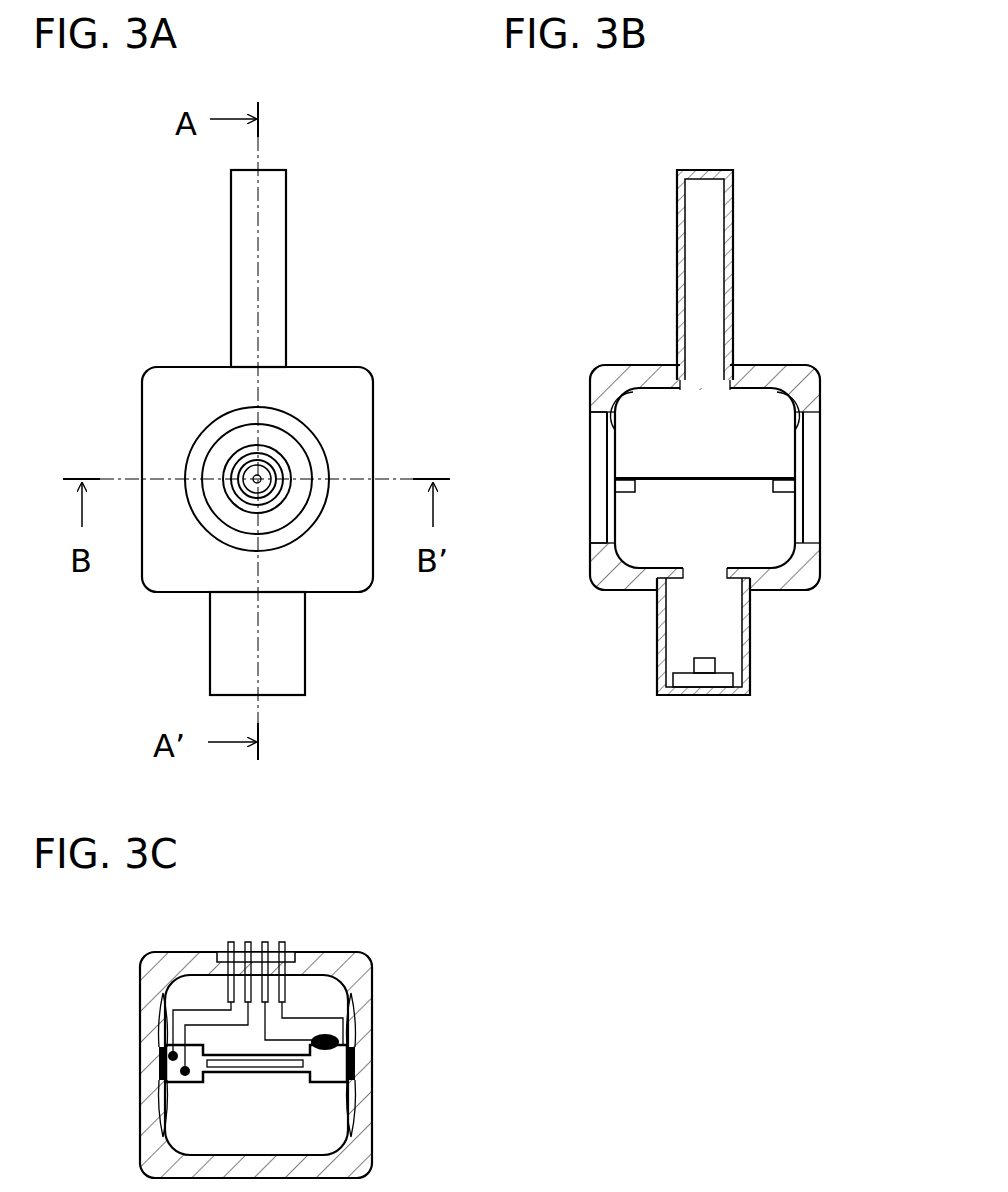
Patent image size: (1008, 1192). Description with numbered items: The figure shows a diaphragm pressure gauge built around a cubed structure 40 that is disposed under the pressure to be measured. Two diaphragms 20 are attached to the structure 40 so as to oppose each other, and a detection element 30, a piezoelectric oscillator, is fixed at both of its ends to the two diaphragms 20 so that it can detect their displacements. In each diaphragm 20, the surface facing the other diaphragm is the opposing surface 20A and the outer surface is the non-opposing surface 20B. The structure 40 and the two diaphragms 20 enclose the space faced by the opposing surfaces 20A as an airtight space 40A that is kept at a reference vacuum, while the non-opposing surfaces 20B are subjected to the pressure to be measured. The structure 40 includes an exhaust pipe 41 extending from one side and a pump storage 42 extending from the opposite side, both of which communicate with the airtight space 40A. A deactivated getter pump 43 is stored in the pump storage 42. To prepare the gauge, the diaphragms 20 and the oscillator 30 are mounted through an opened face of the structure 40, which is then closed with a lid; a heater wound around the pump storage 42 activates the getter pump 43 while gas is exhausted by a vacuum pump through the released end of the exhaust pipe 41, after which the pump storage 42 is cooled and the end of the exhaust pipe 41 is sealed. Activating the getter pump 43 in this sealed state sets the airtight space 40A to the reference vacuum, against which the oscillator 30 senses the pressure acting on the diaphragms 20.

In FIG. 3A, the diaphragm 20 is at (291, 450).
In FIG. 3B, the diaphragm 20 is at (606, 452).
In FIG. 3C, the diaphragm 20 is at (160, 1046).
In FIG. 3B, the opposing surface 20A is at (617, 425).
In FIG. 3C, the opposing surface 20A is at (170, 1002).
In FIG. 3B, the non-opposing surface 20B is at (607, 520).
In FIG. 3C, the non-opposing surface 20B is at (160, 1112).
In FIG. 3B, the detection element 30 is at (738, 476).
In FIG. 3C, the detection element 30 is at (262, 1084).
In FIG. 3A, the structure 40 is at (373, 418).
In FIG. 3B, the structure 40 is at (627, 578).
In FIG. 3C, the structure 40 is at (332, 950).
In FIG. 3B, the airtight space 40A is at (665, 430).
In FIG. 3A, the exhaust pipe 41 is at (286, 250).
In FIG. 3B, the exhaust pipe 41 is at (733, 247).
In FIG. 3A, the pump storage 42 is at (305, 642).
In FIG. 3B, the pump storage 42 is at (750, 640).
In FIG. 3B, the getter pump 43 is at (718, 682).